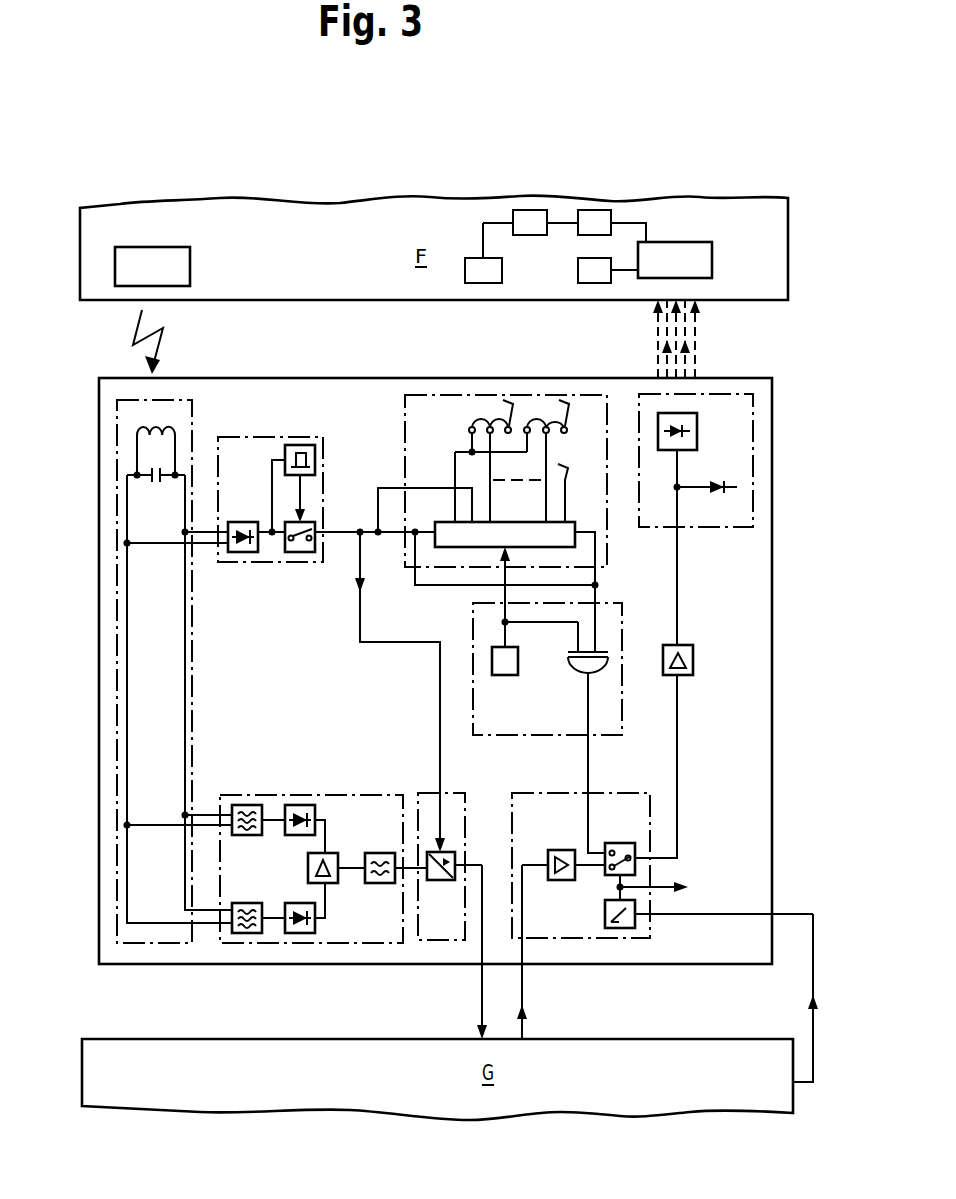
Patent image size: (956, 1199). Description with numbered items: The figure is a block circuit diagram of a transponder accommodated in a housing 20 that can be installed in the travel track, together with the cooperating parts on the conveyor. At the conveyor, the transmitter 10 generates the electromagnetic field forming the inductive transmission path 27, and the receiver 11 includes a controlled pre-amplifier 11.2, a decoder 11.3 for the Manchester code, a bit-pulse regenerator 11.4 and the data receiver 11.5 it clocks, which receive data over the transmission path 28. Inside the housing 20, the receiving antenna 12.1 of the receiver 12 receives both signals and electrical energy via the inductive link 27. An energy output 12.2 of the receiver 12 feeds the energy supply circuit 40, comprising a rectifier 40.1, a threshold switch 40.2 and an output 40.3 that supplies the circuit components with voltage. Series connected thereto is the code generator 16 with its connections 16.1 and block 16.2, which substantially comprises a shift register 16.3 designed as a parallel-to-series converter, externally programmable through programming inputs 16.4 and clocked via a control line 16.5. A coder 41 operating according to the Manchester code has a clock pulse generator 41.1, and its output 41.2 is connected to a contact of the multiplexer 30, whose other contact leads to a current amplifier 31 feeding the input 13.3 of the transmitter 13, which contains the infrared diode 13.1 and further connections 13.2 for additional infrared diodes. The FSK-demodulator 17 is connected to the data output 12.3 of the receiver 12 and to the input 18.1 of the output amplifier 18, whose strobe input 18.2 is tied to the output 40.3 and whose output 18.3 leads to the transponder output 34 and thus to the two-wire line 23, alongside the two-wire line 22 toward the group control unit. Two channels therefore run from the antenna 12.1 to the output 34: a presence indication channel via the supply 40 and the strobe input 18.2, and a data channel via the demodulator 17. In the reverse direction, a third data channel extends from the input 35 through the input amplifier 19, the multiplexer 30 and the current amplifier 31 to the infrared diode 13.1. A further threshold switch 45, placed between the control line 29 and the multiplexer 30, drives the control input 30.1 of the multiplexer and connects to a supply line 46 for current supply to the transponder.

The transmitter 10 is at (165, 258).
The receiver 11 is at (677, 252).
The controlled pre-amplifier 11.2 is at (600, 275).
The decoder 11.3 is at (600, 218).
The bit-pulse regenerator 11.4 is at (472, 275).
The data receiver 11.5 is at (535, 218).
The receiver 12 is at (140, 655).
The receiving antenna 12.1 is at (137, 434).
The energy output 12.2 is at (193, 543).
The data output 12.3 is at (193, 813).
The transmitter 13 is at (738, 407).
The infrared diode 13.1 is at (687, 438).
The further connections 13.2 is at (733, 478).
The input 13.3 is at (680, 528).
The code generator 16 is at (454, 420).
The connection lines 16.1 is at (428, 533).
The code memory 16.2 is at (585, 527).
The shift register 16.3 is at (573, 520).
The programming inputs 16.4 is at (535, 417).
The control line 16.5 is at (498, 552).
The FSK-demodulator 17 is at (345, 818).
The output amplifier 18 is at (428, 932).
The input 18.1 is at (415, 860).
The strobe input 18.2 is at (442, 797).
The output 18.3 is at (467, 862).
The input amplifier 19 is at (555, 850).
The housing 20 is at (773, 722).
The two-wire line 22 is at (525, 1036).
The two-wire line 23 is at (481, 1035).
The inductive transmission path 27 is at (136, 333).
The transmission path 28 is at (688, 332).
The control line 29 is at (813, 912).
The multiplexer 30 is at (627, 840).
The control input 30.1 is at (617, 886).
The current amplifier 31 is at (687, 647).
The output 34 is at (481, 967).
The input 35 is at (524, 967).
The energy supply circuit 40 is at (270, 435).
The rectifier 40.1 is at (247, 553).
The threshold switch 40.2 is at (305, 525).
The output 40.3 is at (325, 533).
The coder 41 is at (607, 635).
The clock pulse generator 41.1 is at (510, 677).
The output 41.2 is at (591, 737).
The further threshold switch 45 is at (628, 930).
The supply line 46 is at (668, 882).